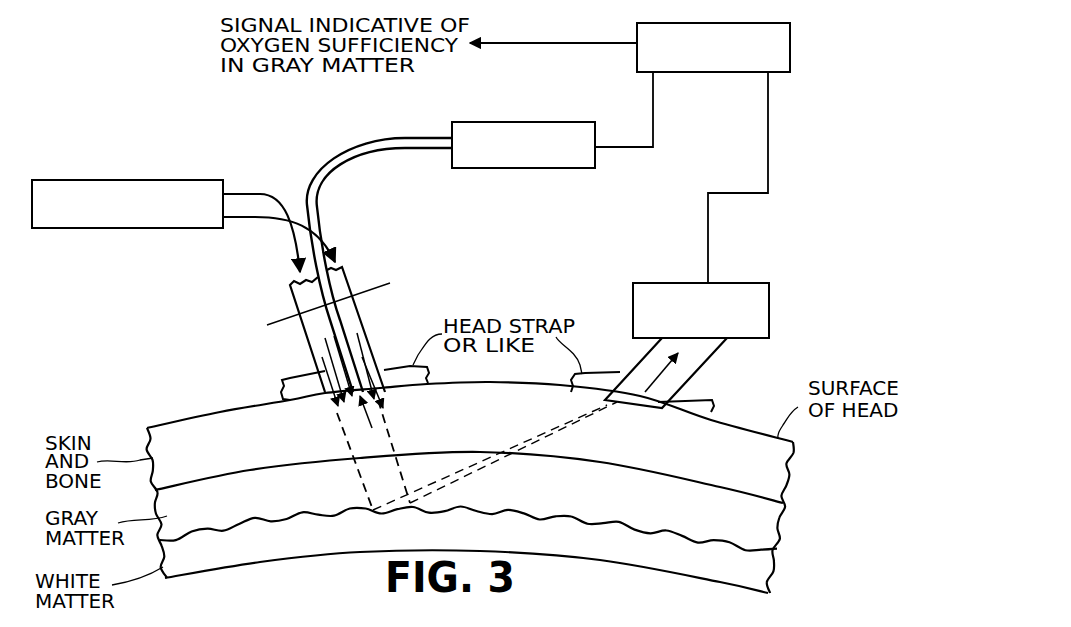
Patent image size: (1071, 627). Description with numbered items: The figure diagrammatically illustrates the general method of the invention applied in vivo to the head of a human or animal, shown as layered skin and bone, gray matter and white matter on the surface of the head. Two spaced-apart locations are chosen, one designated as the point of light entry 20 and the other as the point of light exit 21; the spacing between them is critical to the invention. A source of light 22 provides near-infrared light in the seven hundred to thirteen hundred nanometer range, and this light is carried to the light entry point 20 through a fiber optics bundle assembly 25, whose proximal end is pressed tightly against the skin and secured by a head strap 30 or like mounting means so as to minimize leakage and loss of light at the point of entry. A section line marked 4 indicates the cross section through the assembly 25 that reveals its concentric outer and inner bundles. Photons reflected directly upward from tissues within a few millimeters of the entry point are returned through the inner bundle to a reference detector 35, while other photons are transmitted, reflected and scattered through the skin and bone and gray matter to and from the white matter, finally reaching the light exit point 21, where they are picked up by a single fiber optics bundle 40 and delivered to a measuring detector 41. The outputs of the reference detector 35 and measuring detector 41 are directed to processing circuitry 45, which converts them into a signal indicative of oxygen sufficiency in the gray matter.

The processing circuitry 45 is at (730, 23).
The reference detector 35 is at (497, 168).
The source of light 22 is at (125, 228).
The fiber optics bundle assembly 25 is at (305, 344).
The section line 4- 4 is at (283, 331).
The point of light entry 20 is at (387, 396).
The point of light exit 21 is at (600, 405).
The head strap 30 is at (403, 364).
The measuring detector 41 is at (730, 283).
The single fiber optics bundle 40 is at (712, 357).